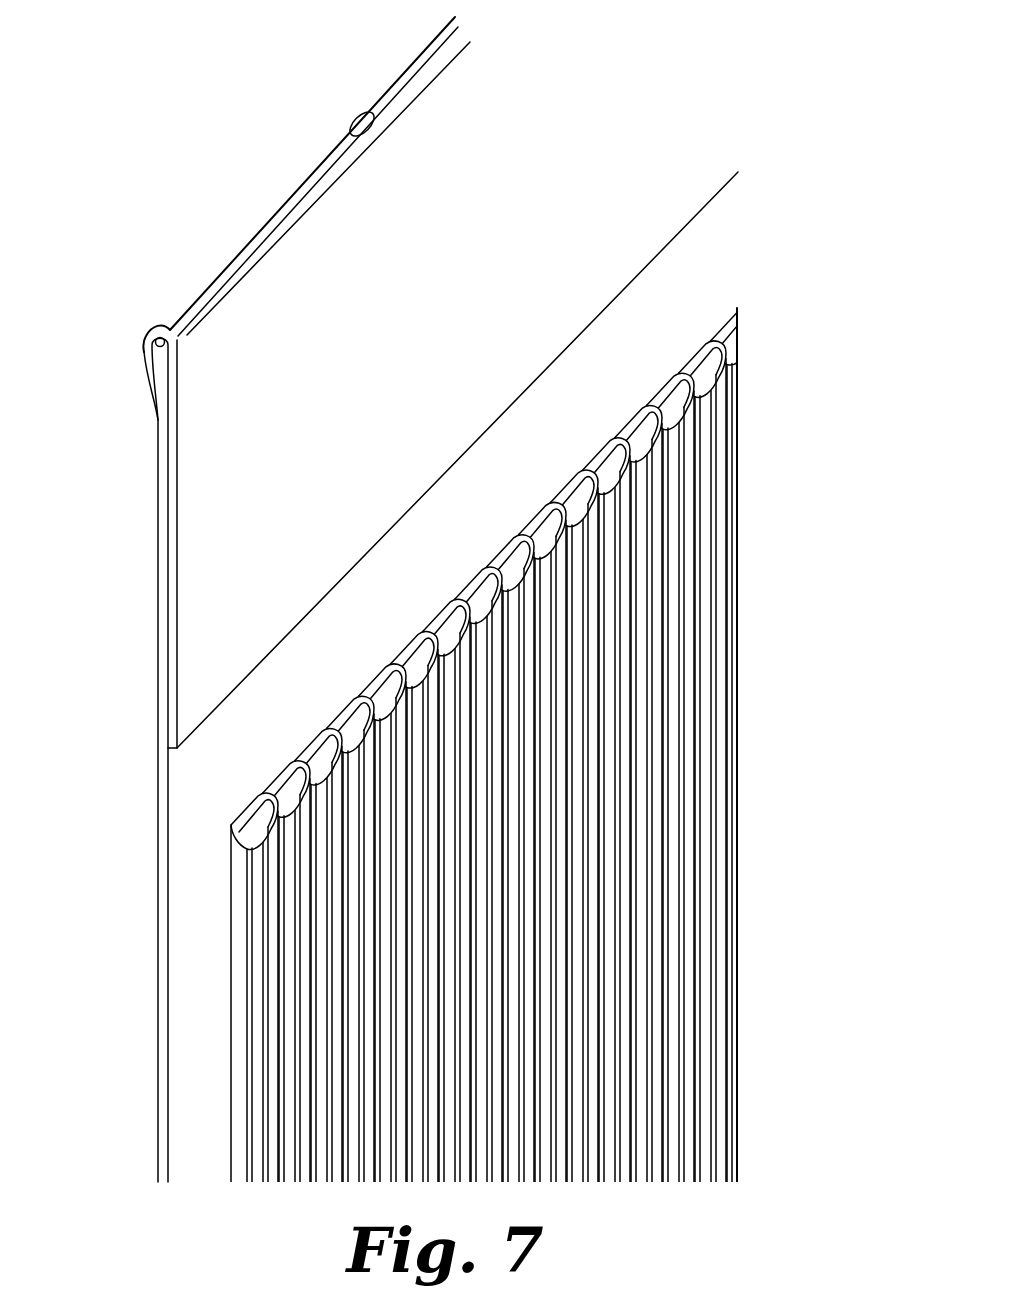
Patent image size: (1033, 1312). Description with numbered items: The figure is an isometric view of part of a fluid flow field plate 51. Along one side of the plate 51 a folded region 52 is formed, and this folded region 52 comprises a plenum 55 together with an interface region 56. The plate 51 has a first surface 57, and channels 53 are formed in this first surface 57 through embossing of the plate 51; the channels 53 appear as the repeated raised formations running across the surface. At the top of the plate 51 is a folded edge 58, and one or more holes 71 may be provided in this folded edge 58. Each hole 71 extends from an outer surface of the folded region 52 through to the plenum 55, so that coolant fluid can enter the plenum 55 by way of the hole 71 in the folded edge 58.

The fluid flow field plate 51 is at (188, 258).
The folded region 52 is at (148, 326).
The channels 53 is at (272, 800).
The plenum 55 is at (163, 343).
The interface region 56 is at (176, 554).
The first surface 57 is at (392, 614).
The folded edge 58 is at (282, 202).
The hole 71 is at (367, 125).